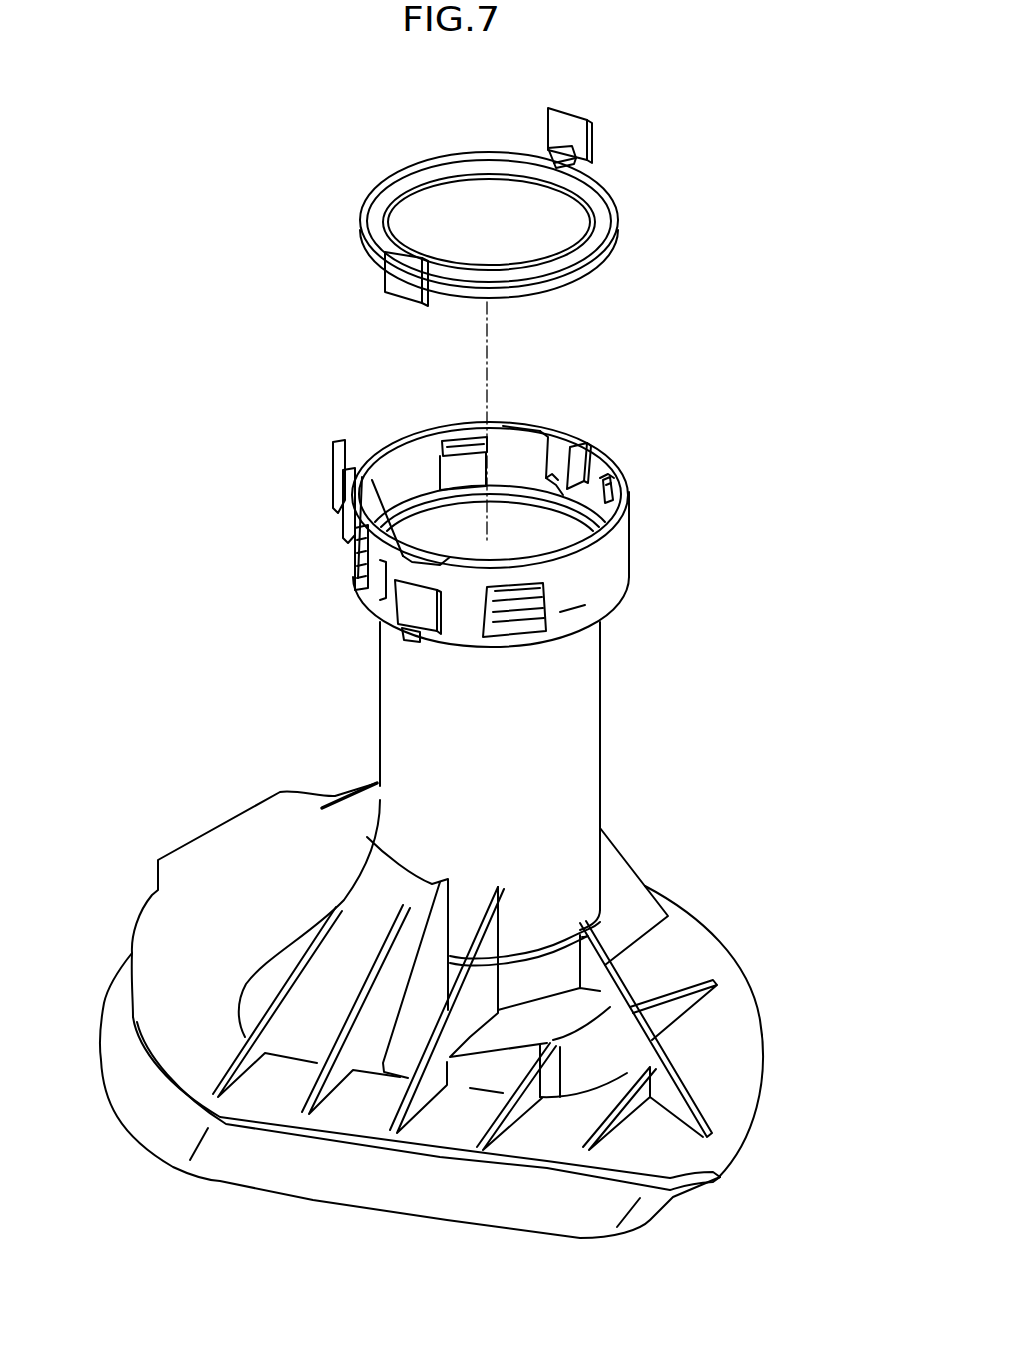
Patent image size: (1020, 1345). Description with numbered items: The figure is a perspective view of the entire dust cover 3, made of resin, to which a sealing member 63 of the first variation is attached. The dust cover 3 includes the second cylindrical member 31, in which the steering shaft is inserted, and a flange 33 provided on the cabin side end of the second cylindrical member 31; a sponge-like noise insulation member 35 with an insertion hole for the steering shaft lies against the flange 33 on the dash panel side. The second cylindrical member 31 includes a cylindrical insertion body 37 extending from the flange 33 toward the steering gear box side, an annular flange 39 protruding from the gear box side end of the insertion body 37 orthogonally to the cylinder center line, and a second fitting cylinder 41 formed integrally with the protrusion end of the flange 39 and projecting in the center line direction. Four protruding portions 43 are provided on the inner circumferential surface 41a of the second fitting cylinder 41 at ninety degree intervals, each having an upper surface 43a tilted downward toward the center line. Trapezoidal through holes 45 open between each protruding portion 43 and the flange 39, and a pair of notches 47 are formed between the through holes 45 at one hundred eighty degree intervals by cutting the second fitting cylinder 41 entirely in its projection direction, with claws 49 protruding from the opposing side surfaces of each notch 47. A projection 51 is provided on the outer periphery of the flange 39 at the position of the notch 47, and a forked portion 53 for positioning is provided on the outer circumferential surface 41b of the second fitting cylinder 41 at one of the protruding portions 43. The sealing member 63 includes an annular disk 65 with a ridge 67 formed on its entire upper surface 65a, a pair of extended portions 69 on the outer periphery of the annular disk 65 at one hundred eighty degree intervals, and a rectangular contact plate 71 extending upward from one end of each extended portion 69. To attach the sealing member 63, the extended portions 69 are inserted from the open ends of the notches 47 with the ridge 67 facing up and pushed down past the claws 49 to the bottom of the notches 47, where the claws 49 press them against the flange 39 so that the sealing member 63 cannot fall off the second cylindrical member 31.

The dust cover 3 is at (766, 847).
The second cylindrical member 31 is at (718, 580).
The flange 33 is at (144, 906).
The noise insulation member 35 is at (122, 1113).
The insertion body 37 is at (600, 648).
The flange 39 is at (610, 608).
The second fitting cylinder 41 is at (533, 537).
The inner circumferential surface 41a is at (505, 448).
The outer circumferential surface 41b is at (567, 617).
The protruding portion 43 is at (440, 445).
The upper surface 43a is at (455, 448).
The through hole 45 is at (445, 467).
The notch 47 is at (560, 460).
The claw 49 is at (553, 483).
The projection 51 is at (420, 634).
The forked portion 53 is at (333, 462).
The sealing member 63 is at (543, 204).
The annular disk 65 is at (605, 262).
The upper surface 65a is at (618, 214).
The ridge 67 is at (432, 161).
The extended portion 69 is at (548, 152).
The contact plate 71 is at (568, 108).